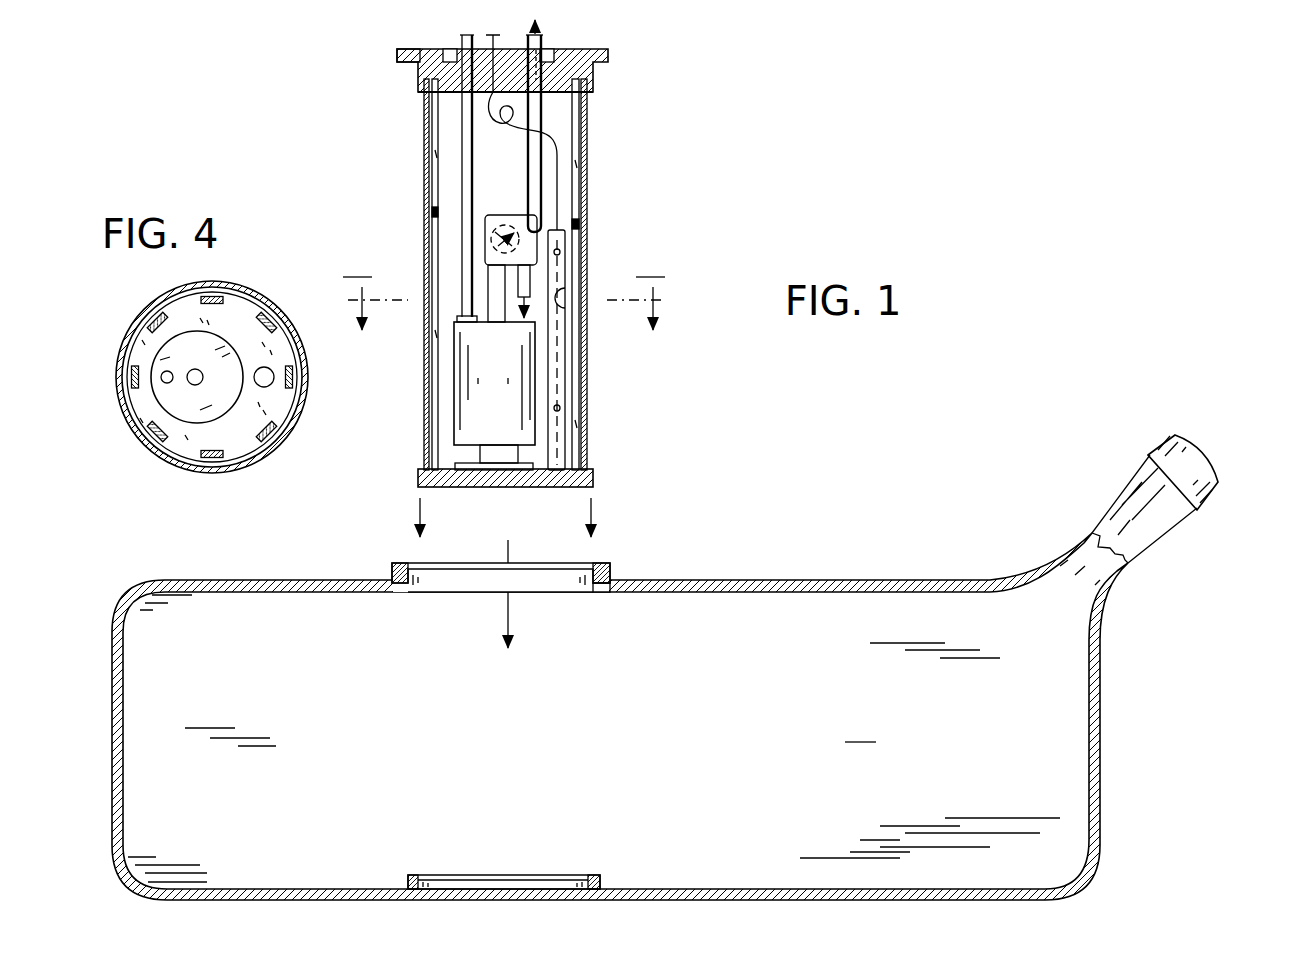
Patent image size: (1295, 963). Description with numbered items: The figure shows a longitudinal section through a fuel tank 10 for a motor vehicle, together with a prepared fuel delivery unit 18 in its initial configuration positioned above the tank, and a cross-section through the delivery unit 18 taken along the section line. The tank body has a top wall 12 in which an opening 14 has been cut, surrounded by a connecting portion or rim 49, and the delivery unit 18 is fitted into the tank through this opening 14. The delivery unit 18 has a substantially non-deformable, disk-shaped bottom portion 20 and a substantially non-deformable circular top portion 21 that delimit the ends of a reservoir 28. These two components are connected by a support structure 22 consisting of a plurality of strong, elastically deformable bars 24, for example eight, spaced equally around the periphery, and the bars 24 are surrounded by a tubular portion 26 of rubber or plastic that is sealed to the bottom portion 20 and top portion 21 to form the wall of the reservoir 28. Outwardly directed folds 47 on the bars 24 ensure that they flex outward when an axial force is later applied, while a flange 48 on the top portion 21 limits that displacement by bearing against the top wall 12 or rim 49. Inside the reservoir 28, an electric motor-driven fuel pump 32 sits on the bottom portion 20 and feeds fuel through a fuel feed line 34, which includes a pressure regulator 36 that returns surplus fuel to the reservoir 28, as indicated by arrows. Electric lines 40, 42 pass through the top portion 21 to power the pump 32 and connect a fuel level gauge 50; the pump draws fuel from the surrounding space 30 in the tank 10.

In FIG. 1, the fuel tank 10 is at (1020, 512).
In FIG. 1, the top wall 12 is at (766, 582).
In FIG. 1, the opening 14 is at (583, 582).
In FIG. 1, the fuel delivery unit 18 is at (604, 200).
In FIG. 1, the bottom portion 20 is at (493, 478).
In FIG. 1, the top portion 21 is at (592, 68).
In FIG. 1, the support structure 22 is at (590, 213).
In FIG. 1, the bars 24 is at (437, 212).
In FIG. 4, the bars 24 is at (226, 298).
In FIG. 1, the tubular portion 26 is at (433, 366).
In FIG. 4, the tubular portion 26 is at (132, 328).
In FIG. 1, the reservoir 28 is at (553, 127).
In FIG. 1, the space 30 is at (860, 727).
In FIG. 1, the fuel pump 32 is at (470, 405).
In FIG. 4, the fuel pump 32 is at (182, 418).
In FIG. 1, the fuel feed line 34 is at (545, 58).
In FIG. 1, the pressure regulator 36 is at (506, 215).
In FIG. 1, the electric line 40 is at (466, 172).
In FIG. 4, the electric line 40 is at (162, 385).
In FIG. 1, the electric line 42 is at (560, 170).
In FIG. 1, the folds 47 is at (570, 290).
In FIG. 1, the flange 48 is at (400, 52).
In FIG. 1, the rim 49 is at (600, 590).
In FIG. 1, the fuel filling level gauge 50 is at (562, 378).
In FIG. 4, the fuel filling level gauge 50 is at (270, 386).